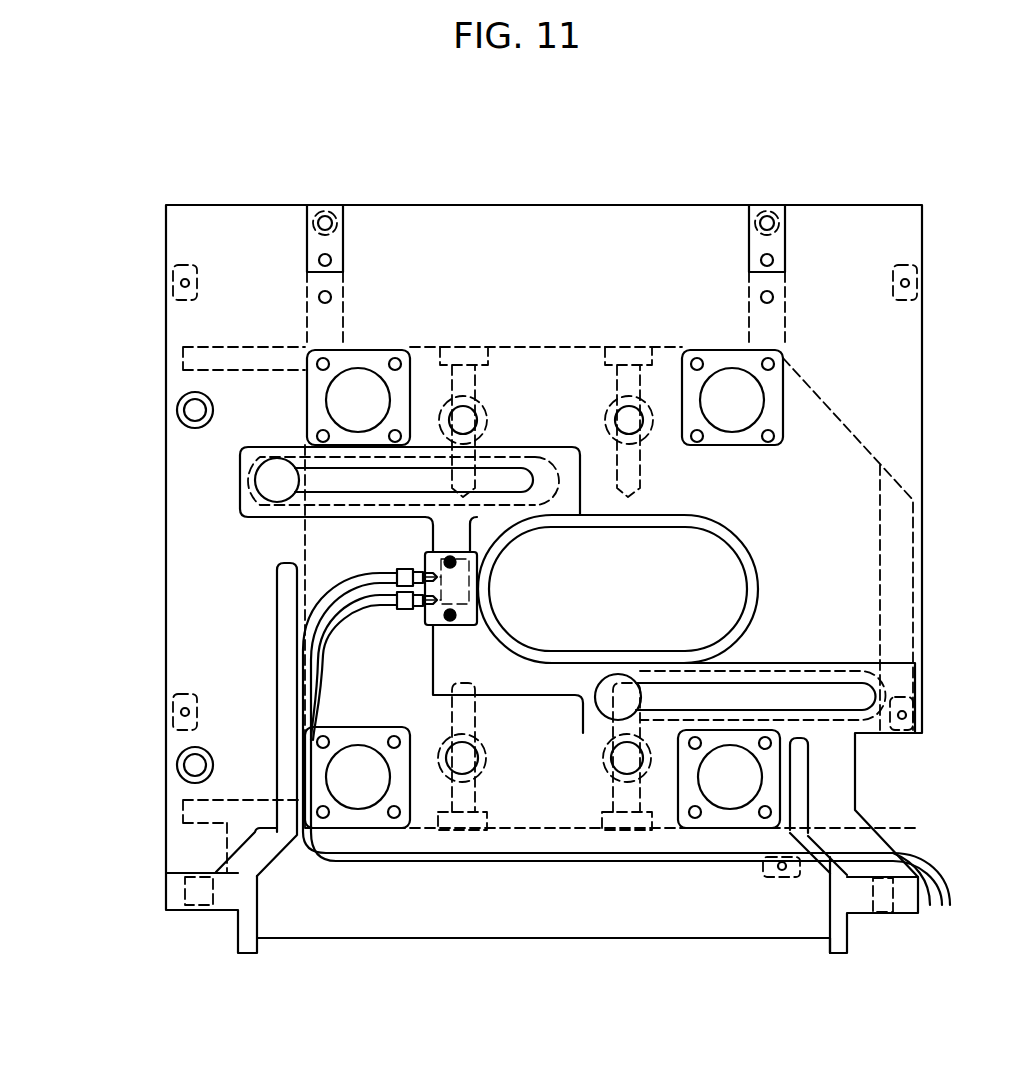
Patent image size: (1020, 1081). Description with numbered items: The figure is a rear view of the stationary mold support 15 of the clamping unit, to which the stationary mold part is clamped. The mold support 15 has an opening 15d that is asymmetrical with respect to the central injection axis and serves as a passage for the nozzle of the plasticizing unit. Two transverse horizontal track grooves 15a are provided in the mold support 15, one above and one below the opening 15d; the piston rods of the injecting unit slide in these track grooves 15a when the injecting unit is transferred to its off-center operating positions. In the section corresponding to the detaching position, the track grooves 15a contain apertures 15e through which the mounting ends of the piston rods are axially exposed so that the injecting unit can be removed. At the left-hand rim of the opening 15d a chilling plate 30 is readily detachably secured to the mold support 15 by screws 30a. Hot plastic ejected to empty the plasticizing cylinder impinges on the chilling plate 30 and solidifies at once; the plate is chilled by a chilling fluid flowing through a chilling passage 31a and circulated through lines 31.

The stationary mold support 15 is at (375, 205).
The track grooves 15a is at (511, 468).
The opening 15d is at (597, 620).
The apertures 15e is at (268, 480).
The chilling plate 30 is at (415, 556).
The screws 30a is at (452, 615).
The lines 31 is at (330, 622).
The chilling passage 31a is at (440, 613).